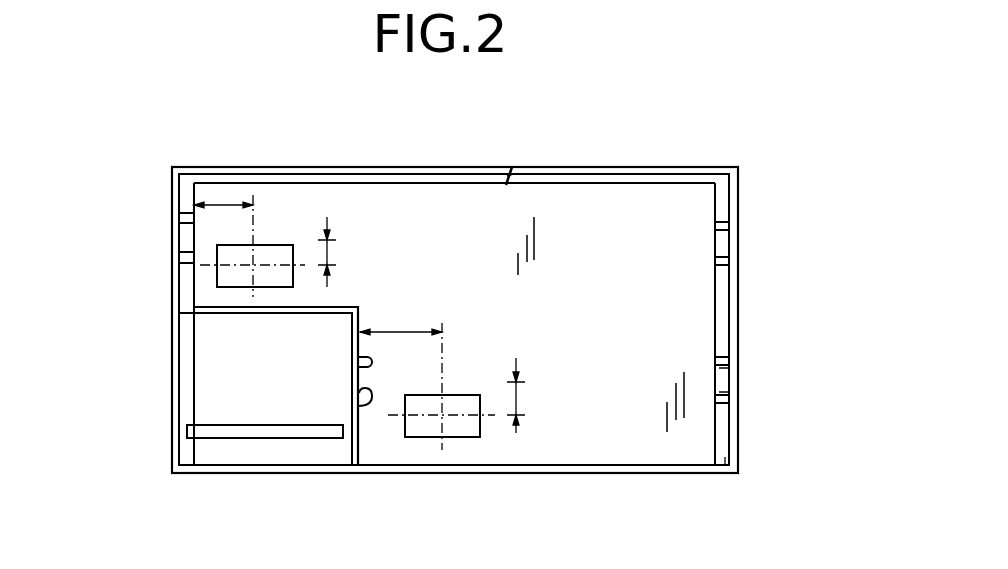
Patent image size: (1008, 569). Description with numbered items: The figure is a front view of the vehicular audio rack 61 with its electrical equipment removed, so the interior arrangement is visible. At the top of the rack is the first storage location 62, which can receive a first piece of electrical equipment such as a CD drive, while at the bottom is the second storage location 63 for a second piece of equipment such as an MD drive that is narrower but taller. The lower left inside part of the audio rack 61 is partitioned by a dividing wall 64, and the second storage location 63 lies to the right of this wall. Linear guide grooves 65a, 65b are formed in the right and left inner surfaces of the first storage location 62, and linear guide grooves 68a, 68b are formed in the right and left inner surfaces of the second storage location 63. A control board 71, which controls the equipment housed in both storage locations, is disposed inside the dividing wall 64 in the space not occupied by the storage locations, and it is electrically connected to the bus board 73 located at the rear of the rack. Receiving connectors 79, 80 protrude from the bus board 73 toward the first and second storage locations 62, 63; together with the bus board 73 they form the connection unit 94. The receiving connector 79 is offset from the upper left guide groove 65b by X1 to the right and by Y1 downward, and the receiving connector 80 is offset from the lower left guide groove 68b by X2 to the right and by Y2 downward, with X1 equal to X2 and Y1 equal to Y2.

The vehicular audio rack 61 is at (682, 165).
The first storage location 62 is at (393, 167).
The second storage location 63 is at (724, 475).
The dividing wall 64 is at (213, 318).
The guide groove 65a is at (729, 249).
The guide groove 65b is at (172, 250).
The guide groove 68a is at (729, 391).
The guide groove 68b is at (376, 392).
The control board 71 is at (238, 440).
The bus board 73 is at (615, 174).
The receiving connector 79 is at (288, 167).
The receiving connector 80 is at (465, 460).
The connection unit 94 is at (510, 170).
The dimension X1 is at (215, 167).
The dimension X2 is at (410, 330).
The dimension Y1 is at (327, 252).
The dimension Y2 is at (516, 390).